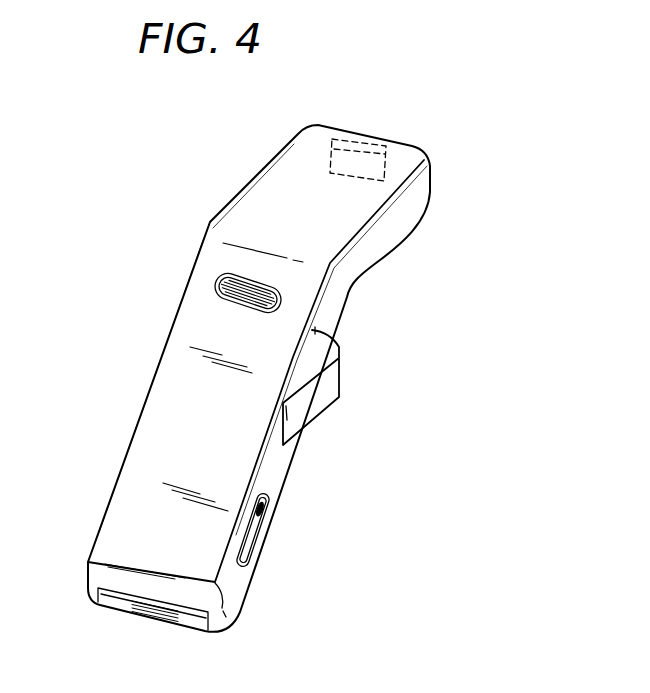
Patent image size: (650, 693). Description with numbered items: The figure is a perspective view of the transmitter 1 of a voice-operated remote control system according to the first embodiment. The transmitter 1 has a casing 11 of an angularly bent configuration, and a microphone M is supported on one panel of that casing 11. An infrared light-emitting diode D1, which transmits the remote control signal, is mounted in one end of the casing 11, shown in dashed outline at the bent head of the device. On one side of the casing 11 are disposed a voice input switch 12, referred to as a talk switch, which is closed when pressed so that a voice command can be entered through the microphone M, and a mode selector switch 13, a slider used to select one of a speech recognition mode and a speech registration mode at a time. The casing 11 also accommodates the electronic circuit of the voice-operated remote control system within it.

The transmitter 1 is at (329, 356).
The casing 11 is at (367, 262).
The voice input switch 12 is at (308, 403).
The mode selector switch 13 is at (255, 530).
The microphone M is at (207, 282).
The infrared light-emitting diode D1 is at (350, 142).